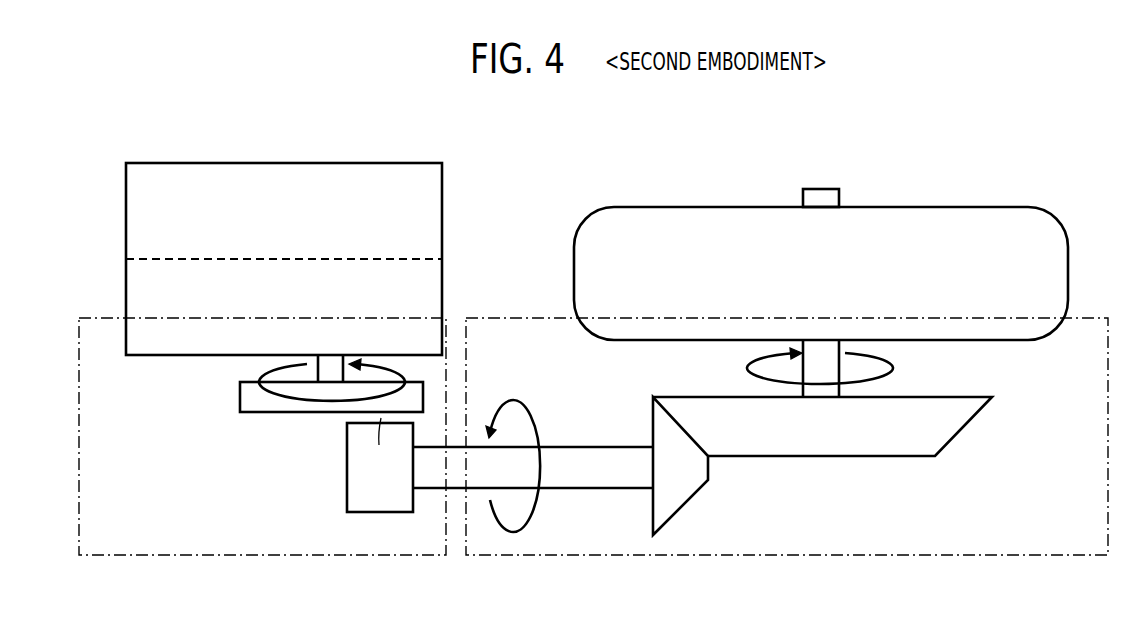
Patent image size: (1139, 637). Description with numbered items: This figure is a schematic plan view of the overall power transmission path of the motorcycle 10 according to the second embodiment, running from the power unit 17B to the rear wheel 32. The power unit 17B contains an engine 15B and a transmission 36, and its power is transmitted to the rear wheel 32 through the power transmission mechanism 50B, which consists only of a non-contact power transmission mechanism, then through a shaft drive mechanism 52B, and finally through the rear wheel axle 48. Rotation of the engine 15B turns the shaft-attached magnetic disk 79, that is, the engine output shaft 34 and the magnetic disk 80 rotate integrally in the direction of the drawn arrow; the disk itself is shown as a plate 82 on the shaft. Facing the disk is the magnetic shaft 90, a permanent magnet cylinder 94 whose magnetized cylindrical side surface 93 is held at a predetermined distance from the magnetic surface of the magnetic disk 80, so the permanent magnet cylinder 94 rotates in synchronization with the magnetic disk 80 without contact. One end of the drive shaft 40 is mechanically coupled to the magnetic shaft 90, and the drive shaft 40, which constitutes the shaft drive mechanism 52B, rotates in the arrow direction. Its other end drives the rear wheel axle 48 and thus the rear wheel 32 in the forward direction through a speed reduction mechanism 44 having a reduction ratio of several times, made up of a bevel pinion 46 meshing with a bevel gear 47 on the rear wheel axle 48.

The motorcycle 10 is at (683, 126).
The power unit 17B is at (331, 161).
The engine 15B is at (126, 205).
The transmission 36 is at (126, 289).
The engine output shaft 34 is at (331, 366).
The shaft-attached magnetic disk 79 is at (228, 382).
The magnetic disk 80 is at (268, 414).
The plate 82 is at (285, 414).
The power transmission mechanism 50B is at (334, 424).
The magnetic shaft 90 is at (381, 520).
The magnetized cylindrical side surface 93 is at (355, 512).
The permanent magnet cylinder 94 is at (413, 503).
The drive shaft 40 is at (608, 480).
The speed reduction mechanism 44 is at (604, 363).
The bevel pinion 46 is at (663, 420).
The bevel gear 47 is at (690, 405).
The rear wheel axle 48 is at (815, 350).
The rear wheel 32 is at (945, 207).
The shaft drive mechanism 52B is at (533, 571).